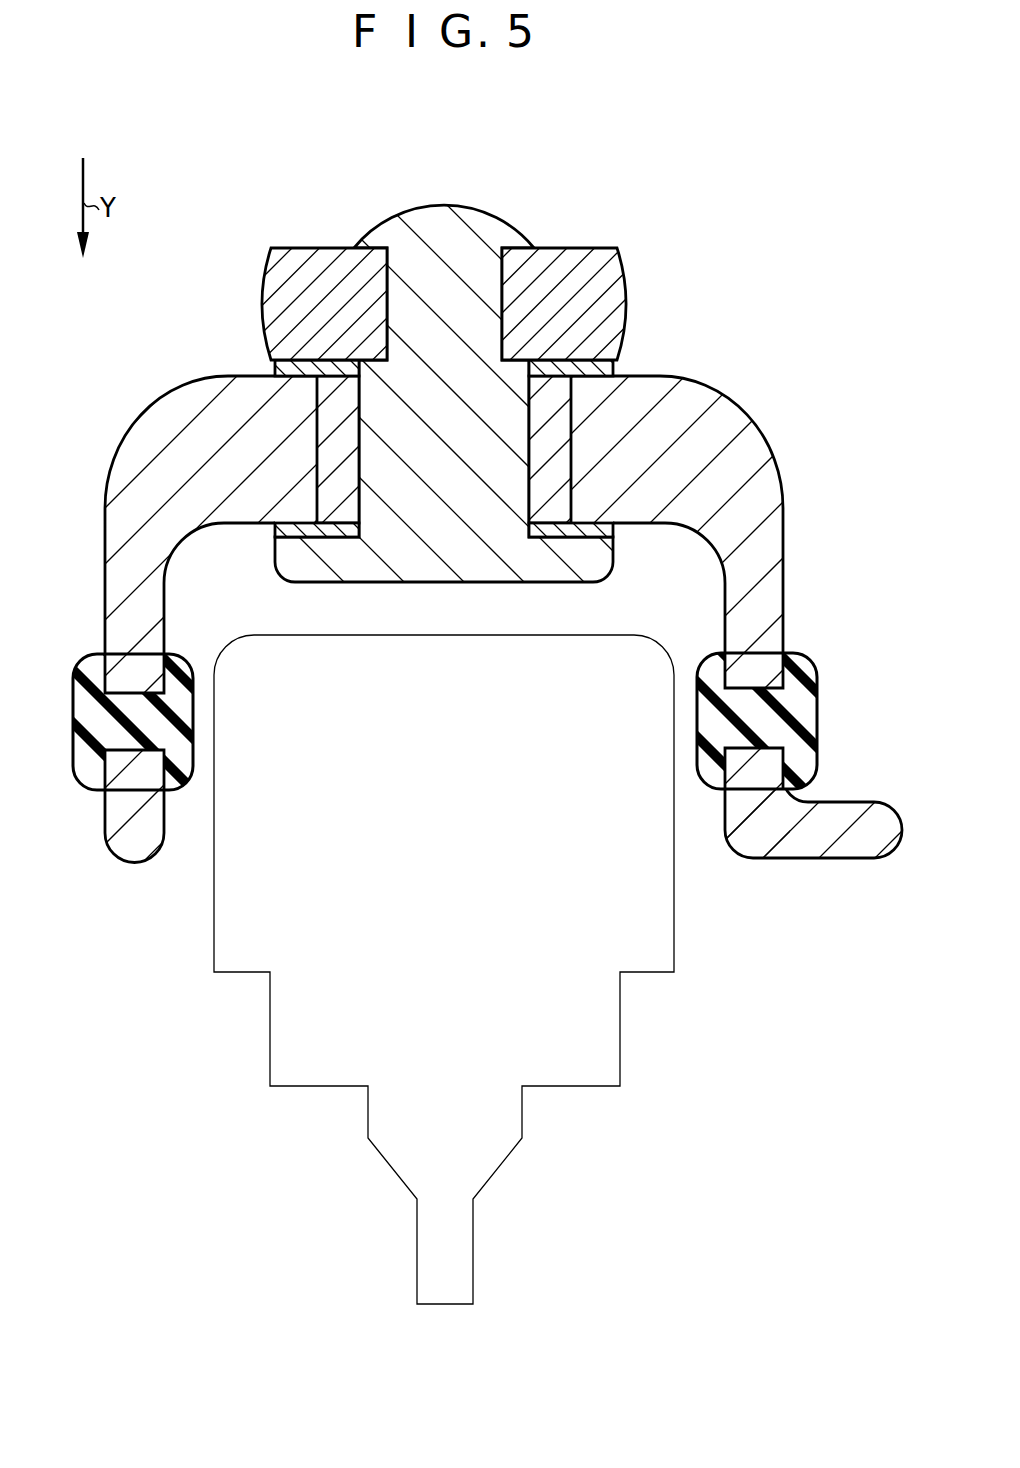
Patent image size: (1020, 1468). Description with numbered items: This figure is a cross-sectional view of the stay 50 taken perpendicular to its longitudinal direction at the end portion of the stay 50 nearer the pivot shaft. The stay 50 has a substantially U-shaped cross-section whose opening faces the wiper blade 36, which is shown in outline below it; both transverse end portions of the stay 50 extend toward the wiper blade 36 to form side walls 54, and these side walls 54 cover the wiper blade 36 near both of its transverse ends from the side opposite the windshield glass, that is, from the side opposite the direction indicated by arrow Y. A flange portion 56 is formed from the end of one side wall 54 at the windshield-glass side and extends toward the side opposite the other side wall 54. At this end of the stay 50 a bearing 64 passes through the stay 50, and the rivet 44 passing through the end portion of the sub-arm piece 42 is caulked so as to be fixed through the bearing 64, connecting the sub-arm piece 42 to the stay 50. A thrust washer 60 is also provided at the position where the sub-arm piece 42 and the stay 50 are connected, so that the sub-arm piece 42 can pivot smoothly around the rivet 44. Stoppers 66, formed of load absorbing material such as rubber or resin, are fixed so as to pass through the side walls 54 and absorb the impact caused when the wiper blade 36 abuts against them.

The wiper blade 36 is at (211, 926).
The sub-arm piece 42 is at (629, 287).
The rivet 44 is at (452, 207).
The stay 50 is at (226, 376).
The side walls 54 is at (105, 602).
The flange portion 56 is at (845, 802).
The thrust washer 60 is at (273, 370).
The bearing 64 is at (563, 428).
The stoppers 66 is at (193, 725).